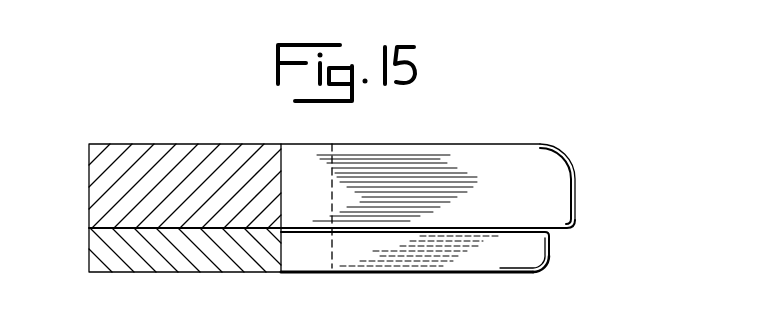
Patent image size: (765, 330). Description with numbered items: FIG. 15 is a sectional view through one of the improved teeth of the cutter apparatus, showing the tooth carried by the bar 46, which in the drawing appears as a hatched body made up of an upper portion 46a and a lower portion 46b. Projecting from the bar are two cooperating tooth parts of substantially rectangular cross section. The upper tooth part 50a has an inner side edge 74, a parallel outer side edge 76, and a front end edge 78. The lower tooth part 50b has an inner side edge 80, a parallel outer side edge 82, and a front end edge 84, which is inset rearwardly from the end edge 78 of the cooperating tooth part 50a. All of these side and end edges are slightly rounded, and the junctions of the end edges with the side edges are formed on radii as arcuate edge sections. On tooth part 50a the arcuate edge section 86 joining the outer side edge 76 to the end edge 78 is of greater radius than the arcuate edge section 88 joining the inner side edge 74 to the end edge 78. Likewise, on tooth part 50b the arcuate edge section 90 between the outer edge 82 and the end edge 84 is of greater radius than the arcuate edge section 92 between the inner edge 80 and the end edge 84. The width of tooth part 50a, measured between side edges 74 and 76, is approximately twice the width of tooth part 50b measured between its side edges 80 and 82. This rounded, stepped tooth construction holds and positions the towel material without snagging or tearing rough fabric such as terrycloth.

The bar 46 is at (154, 207).
The upper layer of workpiece 46a is at (155, 150).
The lower layer of workpiece 46b is at (130, 265).
The tooth part 50a is at (449, 200).
The tooth part 50b is at (435, 267).
The inner side edge 74 is at (488, 229).
The outer side edge 76 is at (497, 145).
The front end edge 78 is at (570, 204).
The inner side edge 80 is at (406, 225).
The outer side edge 82 is at (462, 280).
The front end edge 84 is at (530, 267).
The arcuate edge section 86 is at (566, 164).
The arcuate edge section 88 is at (574, 226).
The arcuate edge section 90 is at (547, 269).
The arcuate edge section 92 is at (554, 233).